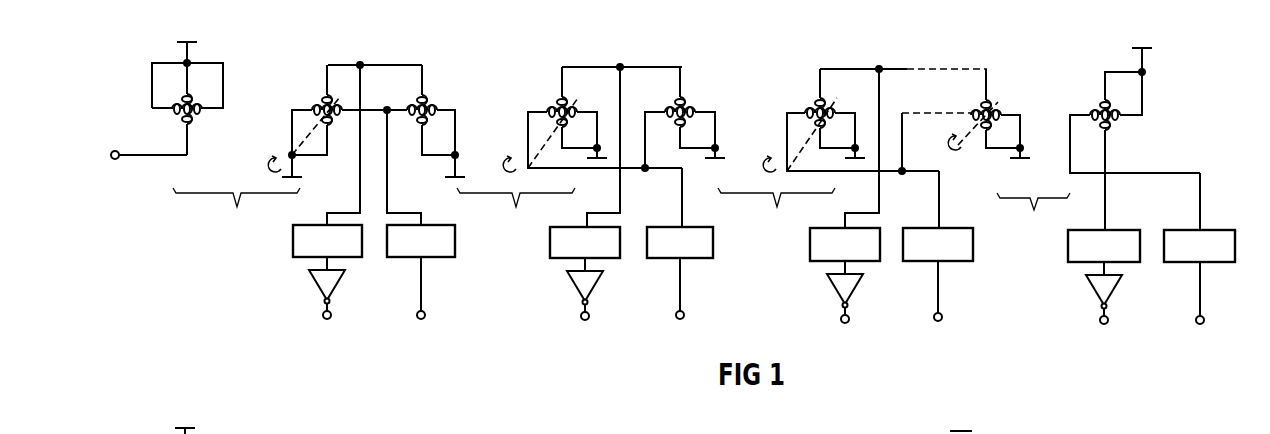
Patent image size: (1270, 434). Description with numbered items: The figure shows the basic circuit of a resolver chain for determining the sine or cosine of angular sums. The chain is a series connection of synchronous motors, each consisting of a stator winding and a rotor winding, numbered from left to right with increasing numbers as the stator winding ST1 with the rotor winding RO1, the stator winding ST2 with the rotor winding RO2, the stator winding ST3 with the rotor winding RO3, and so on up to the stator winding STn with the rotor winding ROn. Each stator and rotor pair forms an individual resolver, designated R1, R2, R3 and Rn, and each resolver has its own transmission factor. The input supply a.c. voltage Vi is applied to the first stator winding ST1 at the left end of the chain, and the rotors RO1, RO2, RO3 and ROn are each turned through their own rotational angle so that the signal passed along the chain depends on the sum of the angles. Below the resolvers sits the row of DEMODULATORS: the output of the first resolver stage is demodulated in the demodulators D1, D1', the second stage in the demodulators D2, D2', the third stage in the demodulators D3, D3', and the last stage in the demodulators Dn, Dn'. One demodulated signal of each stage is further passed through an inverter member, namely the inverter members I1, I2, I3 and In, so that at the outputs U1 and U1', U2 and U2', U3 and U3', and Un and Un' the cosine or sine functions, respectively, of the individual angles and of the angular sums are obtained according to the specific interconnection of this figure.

The stator winding ST1 is at (172, 99).
The input supply a.c. voltage Vi is at (138, 153).
The rotor winding RO1 is at (322, 97).
The stator winding ST2 is at (427, 99).
The resolver R1 is at (236, 211).
The demodulator D1 is at (327, 162).
The demodulator D1' is at (421, 185).
The inverter member I1 is at (318, 288).
The output voltage U1 is at (326, 336).
The output voltage U1' is at (422, 302).
The demodulators DEMODULATORS is at (278, 253).
The rotor winding RO2 is at (558, 99).
The stator winding ST3 is at (685, 100).
The resolver R2 is at (516, 211).
The demodulator D2 is at (585, 164).
The demodulator D2' is at (680, 213).
The inverter member I2 is at (575, 289).
The output voltage U2 is at (584, 336).
The output voltage U2' is at (681, 302).
The rotor winding RO3 is at (816, 100).
The resolver R3 is at (776, 211).
The demodulator D3 is at (845, 166).
The demodulator D3' is at (938, 216).
The inverter member I3 is at (835, 290).
The output voltage U3 is at (844, 338).
The output voltage U3' is at (940, 305).
The stator winding STn is at (990, 104).
The rotor winding ROn is at (1101, 104).
The resolver Rn is at (1033, 215).
The demodulator Dn is at (1104, 196).
The demodulator Dn' is at (1199, 217).
The inverter member In is at (1094, 292).
The output voltage Un is at (1104, 340).
The output voltage Un' is at (1201, 306).